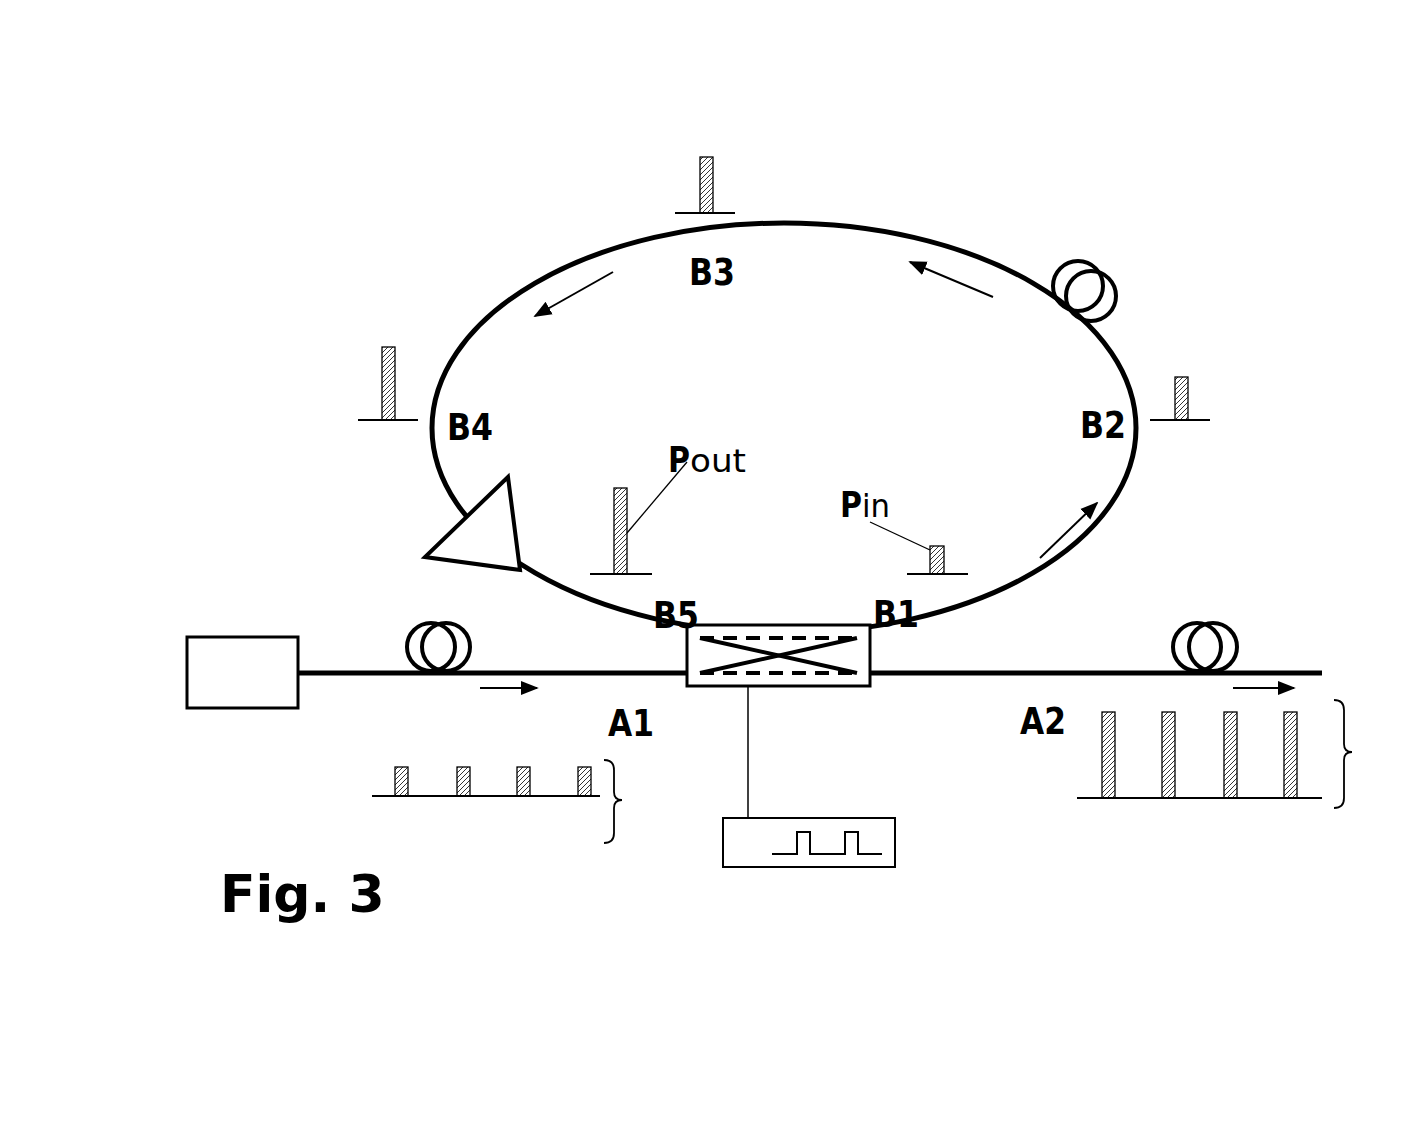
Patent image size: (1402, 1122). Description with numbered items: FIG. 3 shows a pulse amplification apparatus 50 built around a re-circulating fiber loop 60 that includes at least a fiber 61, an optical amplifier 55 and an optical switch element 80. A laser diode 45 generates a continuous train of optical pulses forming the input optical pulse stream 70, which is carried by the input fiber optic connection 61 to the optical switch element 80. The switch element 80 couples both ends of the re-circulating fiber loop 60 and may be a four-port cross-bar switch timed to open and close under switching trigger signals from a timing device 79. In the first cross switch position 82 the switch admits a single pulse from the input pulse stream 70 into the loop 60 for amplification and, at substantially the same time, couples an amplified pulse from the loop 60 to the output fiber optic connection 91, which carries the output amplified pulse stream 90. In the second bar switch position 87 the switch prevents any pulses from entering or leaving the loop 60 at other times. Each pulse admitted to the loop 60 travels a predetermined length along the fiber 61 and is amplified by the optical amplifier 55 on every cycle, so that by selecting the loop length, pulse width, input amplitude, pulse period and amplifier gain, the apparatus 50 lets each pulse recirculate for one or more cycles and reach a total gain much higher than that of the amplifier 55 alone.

The laser diode 45 is at (272, 640).
The pulse amplification apparatus 50 is at (434, 250).
The optical amplifier 55 is at (457, 533).
The re-circulating fiber loop 60 is at (1128, 373).
The fiber 61 is at (918, 235).
The input optical pulse stream 70 is at (522, 801).
The timing device 79 is at (808, 818).
The optical switch element 80 is at (704, 650).
The cross switch position 82 is at (735, 648).
The bar switch position 87 is at (780, 670).
The output amplified pulse stream 90 is at (1238, 754).
The output fiber optic connection 91 is at (1093, 670).